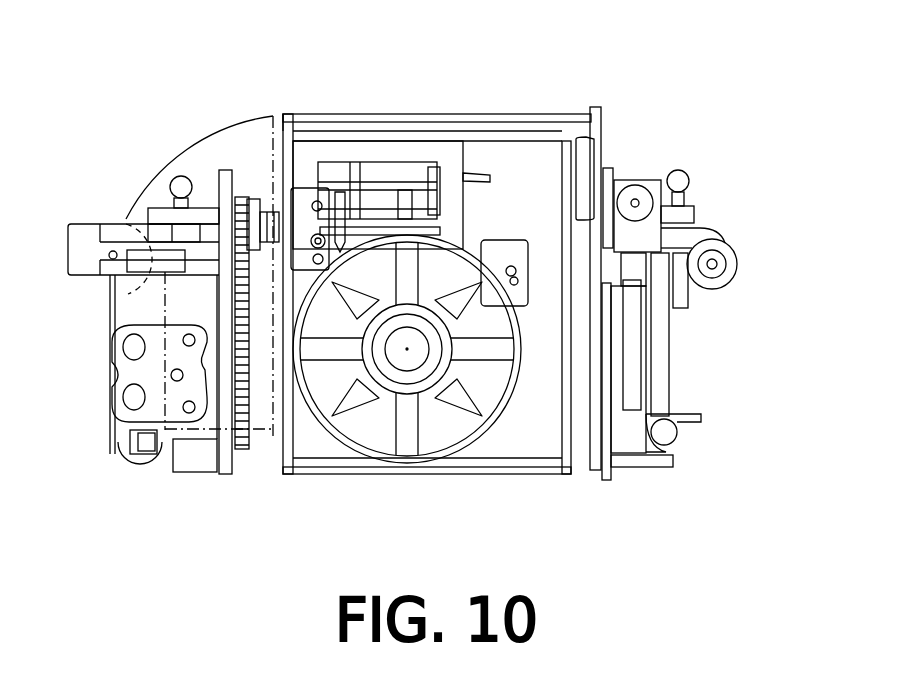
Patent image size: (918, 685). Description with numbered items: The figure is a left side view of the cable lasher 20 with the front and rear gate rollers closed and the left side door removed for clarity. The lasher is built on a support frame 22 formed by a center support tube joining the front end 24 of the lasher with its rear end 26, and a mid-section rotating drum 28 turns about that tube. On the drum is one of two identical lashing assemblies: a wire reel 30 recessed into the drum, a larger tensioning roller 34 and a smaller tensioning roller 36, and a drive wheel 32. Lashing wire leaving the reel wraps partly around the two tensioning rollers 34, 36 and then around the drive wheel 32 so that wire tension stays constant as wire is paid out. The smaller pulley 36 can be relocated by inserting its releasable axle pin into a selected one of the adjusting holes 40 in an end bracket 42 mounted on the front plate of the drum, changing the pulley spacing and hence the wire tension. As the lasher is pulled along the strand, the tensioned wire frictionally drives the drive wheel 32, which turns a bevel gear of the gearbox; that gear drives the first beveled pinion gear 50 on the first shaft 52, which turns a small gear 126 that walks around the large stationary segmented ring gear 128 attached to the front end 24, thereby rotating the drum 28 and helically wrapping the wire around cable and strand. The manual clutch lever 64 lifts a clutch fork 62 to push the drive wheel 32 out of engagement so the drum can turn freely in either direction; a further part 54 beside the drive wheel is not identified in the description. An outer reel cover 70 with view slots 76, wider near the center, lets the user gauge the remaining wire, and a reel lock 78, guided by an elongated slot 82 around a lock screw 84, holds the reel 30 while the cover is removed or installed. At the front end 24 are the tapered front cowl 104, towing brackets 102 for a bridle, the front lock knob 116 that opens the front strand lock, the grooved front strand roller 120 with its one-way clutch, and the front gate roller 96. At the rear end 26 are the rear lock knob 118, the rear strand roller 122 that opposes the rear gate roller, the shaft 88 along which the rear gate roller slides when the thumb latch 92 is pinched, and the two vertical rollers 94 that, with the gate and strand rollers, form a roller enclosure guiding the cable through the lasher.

The cable lasher 20 is at (285, 63).
The support frame 22 is at (616, 134).
The front end 24 is at (130, 207).
The rear end 26 is at (648, 173).
The rotating drum 28 is at (418, 476).
The wire reel 30 is at (340, 454).
The drive wheel 32 is at (443, 186).
The larger tensioning roller 34 is at (303, 203).
The smaller tensioning roller 36 is at (329, 268).
The adjusting holes 40 is at (306, 245).
The end bracket 42 is at (283, 116).
The first beveled pinion gear 50 is at (350, 224).
The first shaft 52 is at (403, 195).
The pawl 54 is at (369, 228).
The clutch fork 62 is at (433, 209).
The manual clutch lever 64 is at (499, 180).
The outer reel cover 70 is at (384, 440).
The view slots 76 is at (467, 406).
The reel lock 78 is at (490, 247).
The elongated slot 82 is at (514, 265).
The lock screw 84 is at (517, 283).
The shaft 88 is at (657, 333).
The thumb latch 92 is at (684, 434).
The vertical rollers 94 is at (631, 377).
The front gate roller 96 is at (132, 456).
The towing brackets 102 is at (114, 377).
The tapered front cowl 104 is at (212, 133).
The front lock knob 116 is at (181, 182).
The rear lock knob 118 is at (681, 183).
The front strand roller 120 is at (100, 278).
The rear strand roller 122 is at (738, 265).
The small gear 126 is at (266, 215).
The large stationary segmented ring gear 128 is at (241, 450).